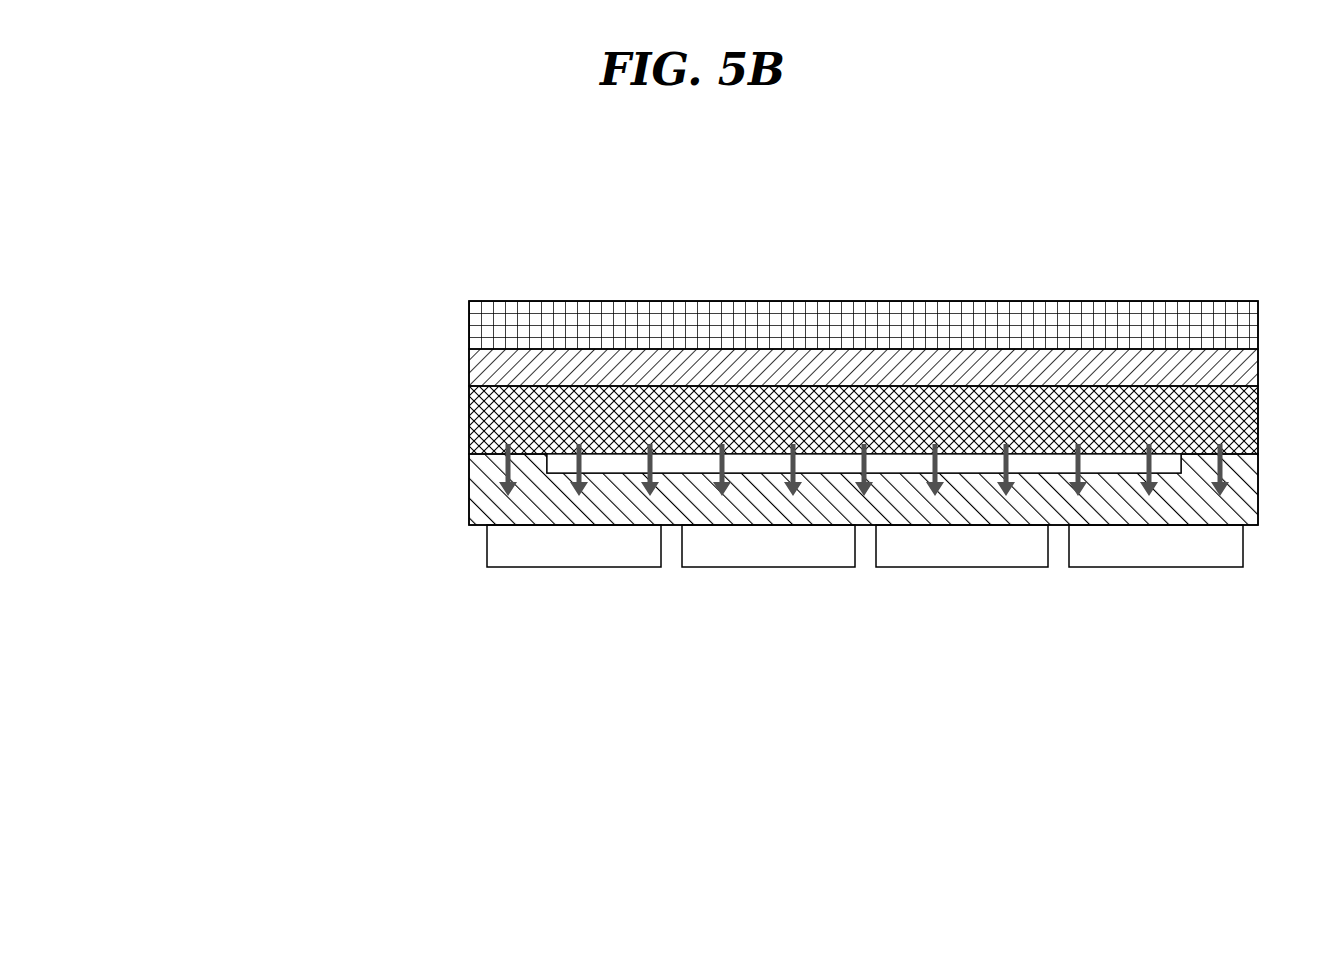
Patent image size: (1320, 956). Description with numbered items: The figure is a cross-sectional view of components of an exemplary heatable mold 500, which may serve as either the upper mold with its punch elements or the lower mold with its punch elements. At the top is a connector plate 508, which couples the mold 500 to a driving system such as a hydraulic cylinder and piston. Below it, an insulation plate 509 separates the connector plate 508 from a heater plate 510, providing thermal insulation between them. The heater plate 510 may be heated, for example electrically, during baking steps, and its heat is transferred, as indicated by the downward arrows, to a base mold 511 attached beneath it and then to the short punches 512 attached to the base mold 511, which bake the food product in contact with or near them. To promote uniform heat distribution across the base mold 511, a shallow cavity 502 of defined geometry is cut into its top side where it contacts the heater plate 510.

The heatable mold 500 is at (1236, 212).
The shallow cavity 502 is at (907, 463).
The connector plate 508 is at (457, 324).
The insulation plate 509 is at (457, 371).
The heater plate 510 is at (457, 418).
The base mold 511 is at (457, 485).
The short punches 512 is at (750, 542).